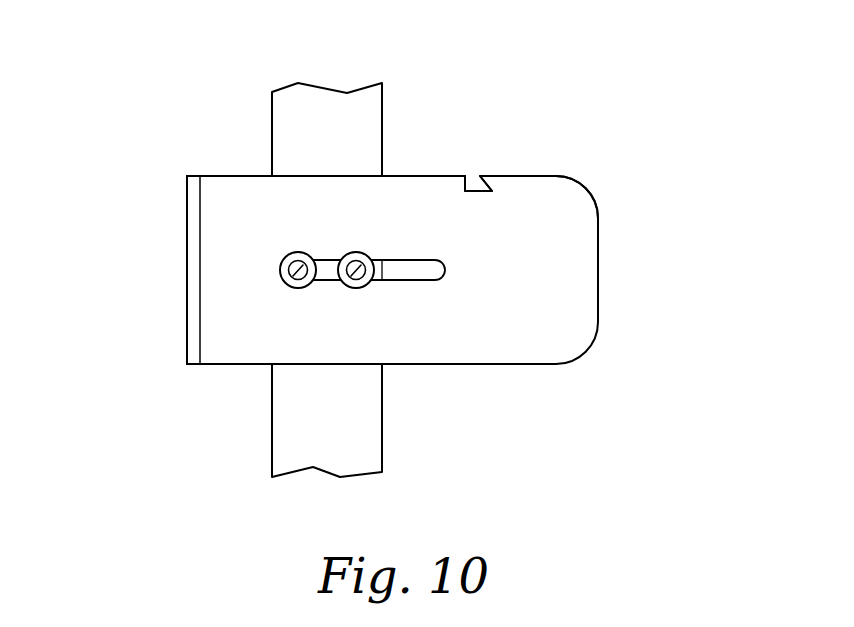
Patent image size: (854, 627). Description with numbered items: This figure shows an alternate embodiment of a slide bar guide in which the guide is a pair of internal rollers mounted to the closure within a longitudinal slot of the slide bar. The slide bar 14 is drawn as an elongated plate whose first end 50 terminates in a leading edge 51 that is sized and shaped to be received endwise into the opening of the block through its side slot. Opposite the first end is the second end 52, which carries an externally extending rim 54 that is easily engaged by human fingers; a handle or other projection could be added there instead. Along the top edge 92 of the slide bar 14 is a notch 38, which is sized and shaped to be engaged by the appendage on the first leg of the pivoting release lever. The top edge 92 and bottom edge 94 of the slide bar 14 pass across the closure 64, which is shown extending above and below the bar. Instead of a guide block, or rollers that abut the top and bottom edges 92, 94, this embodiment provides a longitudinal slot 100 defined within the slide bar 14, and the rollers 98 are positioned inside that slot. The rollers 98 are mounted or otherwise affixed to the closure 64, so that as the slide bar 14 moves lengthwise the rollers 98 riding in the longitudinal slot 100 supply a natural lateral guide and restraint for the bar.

The slide bar 14 is at (577, 205).
The notch 38 is at (472, 188).
The first end 50 is at (630, 323).
The leading edge 51 is at (600, 276).
The second end 52 is at (168, 291).
The externally extending rim 54 is at (187, 210).
The closure 64 is at (373, 112).
The top edge 92 is at (227, 175).
The bottom edge 94 is at (450, 366).
The rollers 98 is at (356, 262).
The longitudinal slot 100 is at (412, 258).